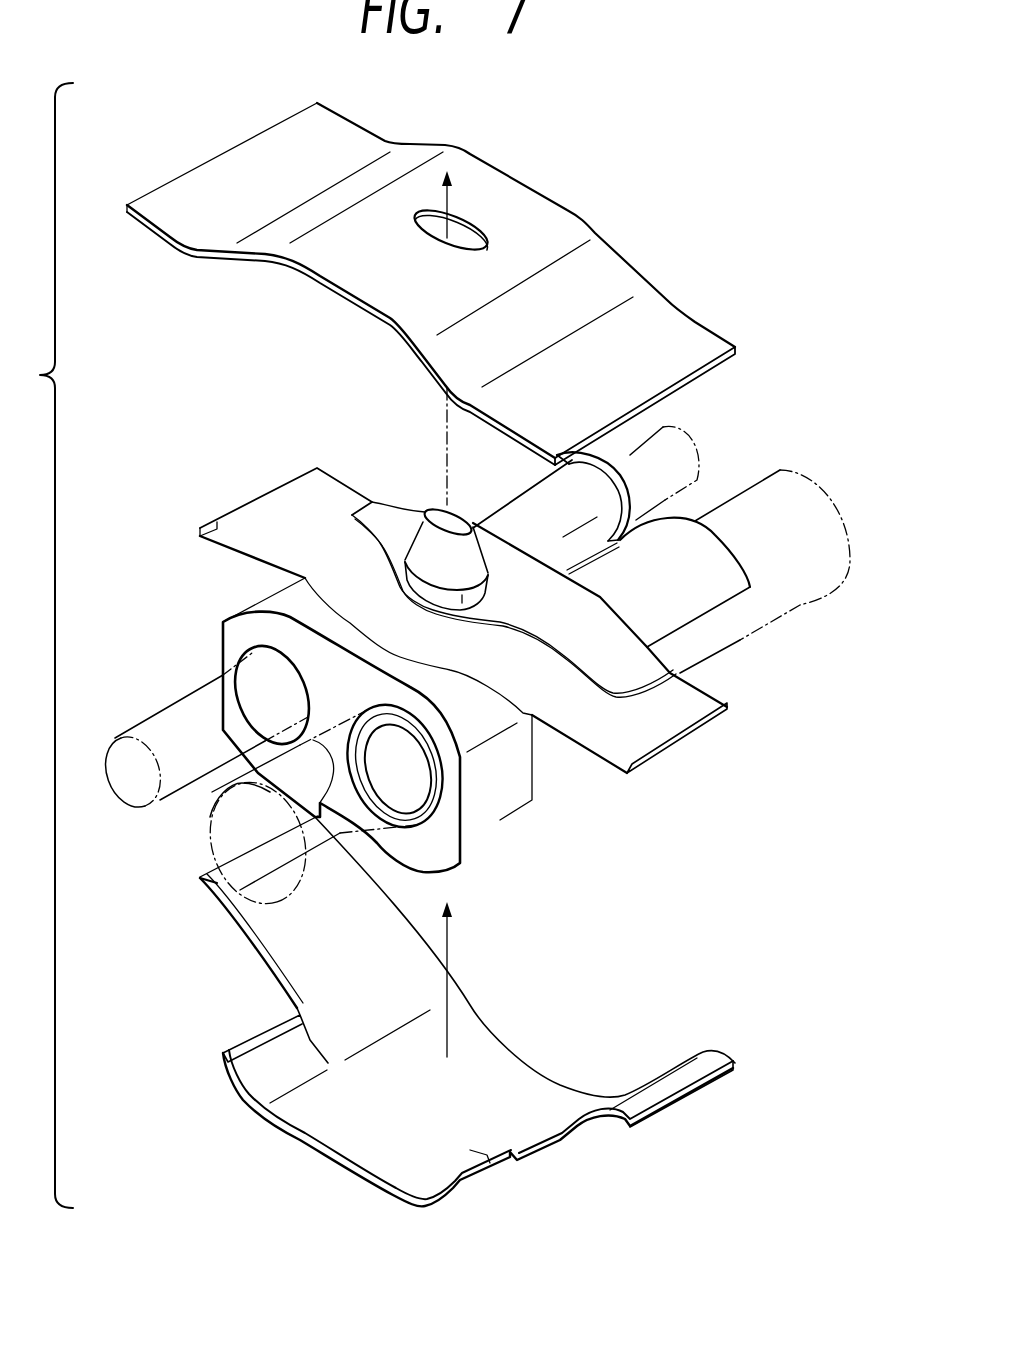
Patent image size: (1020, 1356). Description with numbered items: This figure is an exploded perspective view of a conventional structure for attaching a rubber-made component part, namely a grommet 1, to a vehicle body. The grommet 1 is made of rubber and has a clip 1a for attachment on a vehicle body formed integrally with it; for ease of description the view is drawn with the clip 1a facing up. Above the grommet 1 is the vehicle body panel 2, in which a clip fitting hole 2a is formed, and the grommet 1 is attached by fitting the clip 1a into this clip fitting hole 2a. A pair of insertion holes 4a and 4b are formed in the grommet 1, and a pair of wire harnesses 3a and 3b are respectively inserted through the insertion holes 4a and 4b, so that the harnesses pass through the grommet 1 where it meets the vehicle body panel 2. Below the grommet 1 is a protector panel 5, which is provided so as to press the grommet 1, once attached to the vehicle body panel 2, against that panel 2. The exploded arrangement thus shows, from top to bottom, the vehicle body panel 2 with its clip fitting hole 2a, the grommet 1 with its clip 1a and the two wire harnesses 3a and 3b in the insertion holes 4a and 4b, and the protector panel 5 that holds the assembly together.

The grommet 1 is at (222, 640).
The clip for attachment on a vehicle body 1a is at (418, 550).
The vehicle body panel 2 is at (563, 215).
The clip fitting hole 2a is at (474, 212).
The wire harness 3a is at (698, 452).
The wire harness 3b is at (837, 510).
The insertion hole 4a is at (223, 663).
The insertion hole 4b is at (365, 822).
The protector panel 5 is at (505, 1053).